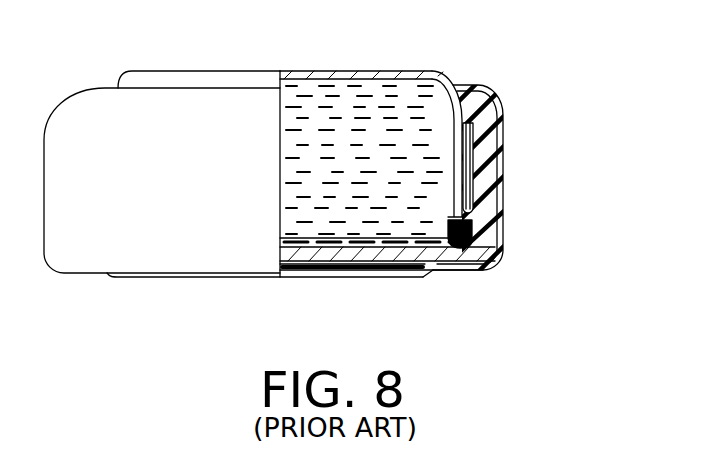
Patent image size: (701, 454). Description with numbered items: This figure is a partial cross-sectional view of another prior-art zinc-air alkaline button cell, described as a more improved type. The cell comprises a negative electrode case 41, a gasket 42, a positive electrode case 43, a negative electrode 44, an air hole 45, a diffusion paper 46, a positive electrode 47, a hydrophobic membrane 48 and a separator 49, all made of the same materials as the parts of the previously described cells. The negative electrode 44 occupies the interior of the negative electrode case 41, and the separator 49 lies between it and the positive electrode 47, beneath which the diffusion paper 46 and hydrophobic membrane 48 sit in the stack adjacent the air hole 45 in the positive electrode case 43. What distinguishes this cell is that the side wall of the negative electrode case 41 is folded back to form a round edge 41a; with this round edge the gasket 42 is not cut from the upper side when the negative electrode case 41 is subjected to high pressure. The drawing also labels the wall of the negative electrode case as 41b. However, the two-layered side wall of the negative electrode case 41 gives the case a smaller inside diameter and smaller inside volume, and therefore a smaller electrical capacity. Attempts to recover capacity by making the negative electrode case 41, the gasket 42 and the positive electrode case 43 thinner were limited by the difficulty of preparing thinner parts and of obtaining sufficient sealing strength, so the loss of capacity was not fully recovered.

The negative electrode case 41 is at (437, 70).
The round edge 41a is at (497, 234).
The cartridge wall 41b is at (383, 70).
The gasket 42 is at (482, 101).
The positive electrode case 43 is at (292, 274).
The negative electrode 44 is at (327, 137).
The air hole 45 is at (352, 267).
The diffusion paper 46 is at (312, 272).
The positive electrode 47 is at (343, 255).
The hydrophobic membrane 48 is at (410, 272).
The separator 49 is at (290, 238).